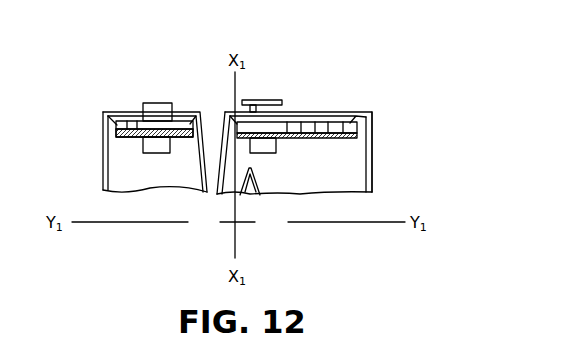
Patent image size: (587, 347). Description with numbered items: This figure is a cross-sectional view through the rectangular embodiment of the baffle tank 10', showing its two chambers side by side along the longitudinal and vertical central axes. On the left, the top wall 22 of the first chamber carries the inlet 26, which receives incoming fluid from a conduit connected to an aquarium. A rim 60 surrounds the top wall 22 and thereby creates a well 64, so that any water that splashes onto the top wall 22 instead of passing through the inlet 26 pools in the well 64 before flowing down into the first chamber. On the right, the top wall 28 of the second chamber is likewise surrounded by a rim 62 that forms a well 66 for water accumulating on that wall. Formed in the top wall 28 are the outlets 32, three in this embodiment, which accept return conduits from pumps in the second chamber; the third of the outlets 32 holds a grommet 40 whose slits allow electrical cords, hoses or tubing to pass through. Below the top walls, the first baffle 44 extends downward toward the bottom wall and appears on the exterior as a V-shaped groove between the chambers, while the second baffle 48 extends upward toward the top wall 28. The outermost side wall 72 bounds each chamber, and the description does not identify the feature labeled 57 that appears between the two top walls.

The baffle tank 10' is at (412, 44).
The top wall of the first chamber 22 is at (183, 120).
The inlet 26 is at (160, 103).
The top wall of the second chamber 28 is at (360, 112).
The outlets 32 is at (334, 122).
The grommet 40 is at (262, 100).
The first baffle 44 is at (202, 172).
The second baffle 48 is at (258, 190).
The gap 57 is at (214, 105).
The rim 60 is at (103, 112).
The rim 62 is at (372, 110).
The well 64 is at (120, 108).
The well 66 is at (351, 100).
The side wall 72 is at (103, 148).